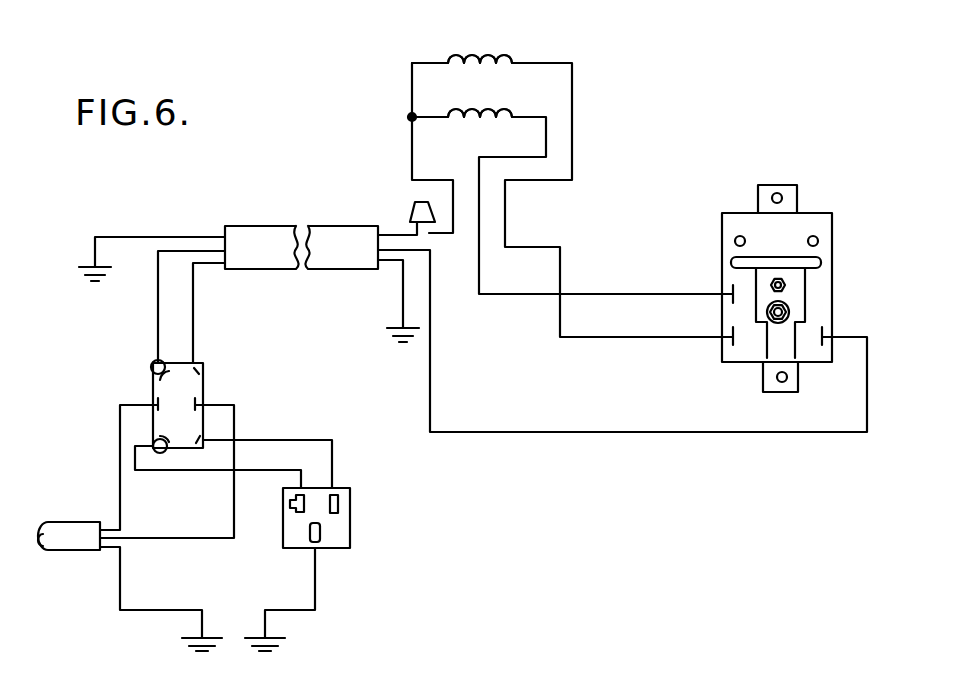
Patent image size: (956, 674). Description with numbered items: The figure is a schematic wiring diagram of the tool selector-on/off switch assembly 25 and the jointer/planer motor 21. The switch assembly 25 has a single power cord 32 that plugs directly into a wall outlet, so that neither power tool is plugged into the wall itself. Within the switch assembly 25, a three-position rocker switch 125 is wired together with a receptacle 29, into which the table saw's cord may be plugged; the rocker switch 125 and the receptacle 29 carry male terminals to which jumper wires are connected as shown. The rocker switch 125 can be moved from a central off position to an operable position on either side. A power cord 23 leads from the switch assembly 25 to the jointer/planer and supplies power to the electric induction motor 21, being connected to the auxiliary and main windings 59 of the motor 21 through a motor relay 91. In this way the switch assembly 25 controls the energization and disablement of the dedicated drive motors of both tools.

The electric induction motor 21 is at (578, 58).
The windings 59 is at (448, 115).
The power cord 23 is at (295, 226).
The motor relay 91 is at (828, 213).
The rocker switch 125 is at (208, 384).
The tool selector-on/off switch assembly 25 is at (98, 392).
The power cord 32 is at (85, 522).
The receptacle 29 is at (350, 512).